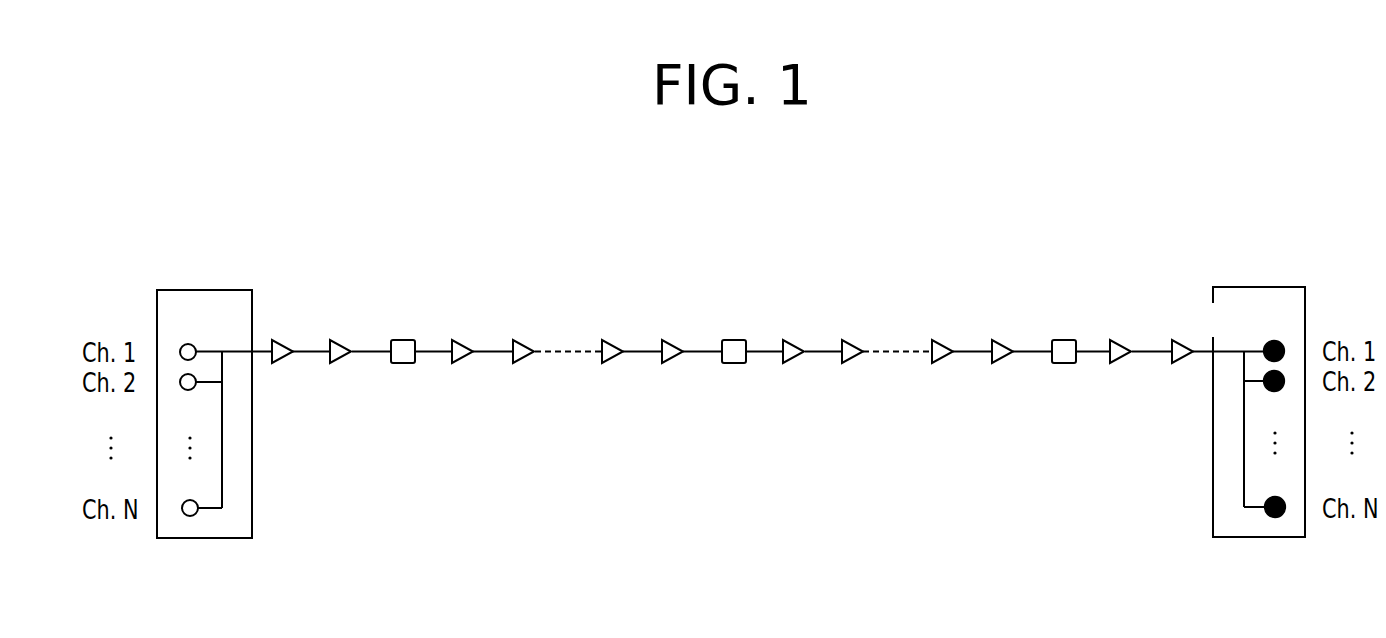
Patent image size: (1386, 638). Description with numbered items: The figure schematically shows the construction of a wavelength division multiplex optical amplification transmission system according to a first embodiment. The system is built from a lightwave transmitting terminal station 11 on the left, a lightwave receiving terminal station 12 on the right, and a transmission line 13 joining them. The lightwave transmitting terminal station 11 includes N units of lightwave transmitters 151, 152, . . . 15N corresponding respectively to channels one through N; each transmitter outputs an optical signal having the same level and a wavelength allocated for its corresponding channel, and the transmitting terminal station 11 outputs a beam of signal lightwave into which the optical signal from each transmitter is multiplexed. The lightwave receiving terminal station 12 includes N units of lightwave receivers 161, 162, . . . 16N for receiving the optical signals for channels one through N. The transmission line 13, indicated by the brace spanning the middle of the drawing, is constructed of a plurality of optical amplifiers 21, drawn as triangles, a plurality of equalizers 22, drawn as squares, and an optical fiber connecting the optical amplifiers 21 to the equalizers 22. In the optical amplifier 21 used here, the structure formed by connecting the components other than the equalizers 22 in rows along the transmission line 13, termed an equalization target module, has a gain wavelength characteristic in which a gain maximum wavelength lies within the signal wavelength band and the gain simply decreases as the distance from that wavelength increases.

The lightwave transmitting terminal station 11 is at (209, 290).
The lightwave receiving terminal station 12 is at (1262, 287).
The transmission line 13 is at (1180, 296).
The lightwave transmitter 151 is at (194, 345).
The lightwave transmitter 152 is at (190, 391).
The lightwave transmitter 15N is at (198, 514).
The lightwave receiver 161 is at (1273, 342).
The lightwave receiver 162 is at (1268, 392).
The lightwave receiver 16N is at (1272, 515).
The optical amplifier 21 is at (278, 365).
The equalizer 22 is at (407, 365).